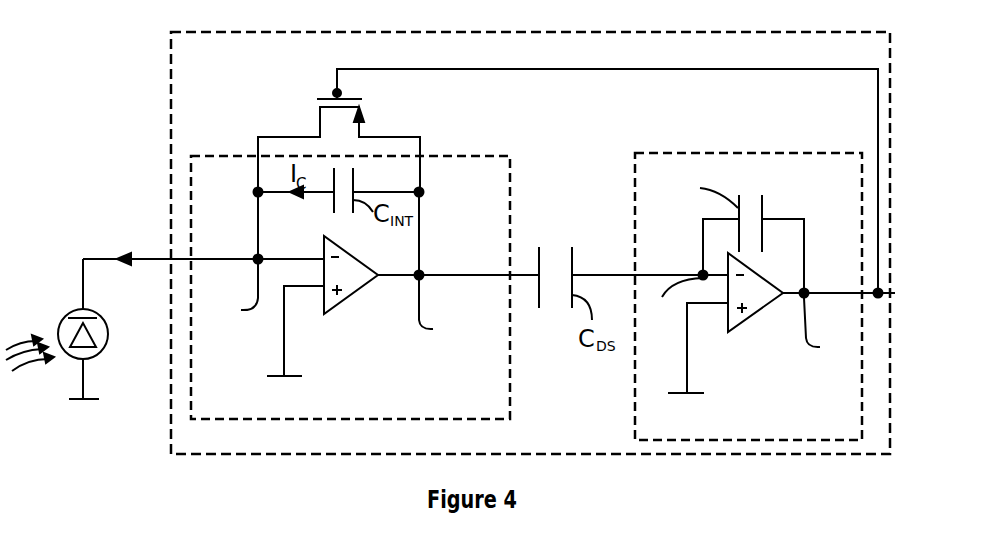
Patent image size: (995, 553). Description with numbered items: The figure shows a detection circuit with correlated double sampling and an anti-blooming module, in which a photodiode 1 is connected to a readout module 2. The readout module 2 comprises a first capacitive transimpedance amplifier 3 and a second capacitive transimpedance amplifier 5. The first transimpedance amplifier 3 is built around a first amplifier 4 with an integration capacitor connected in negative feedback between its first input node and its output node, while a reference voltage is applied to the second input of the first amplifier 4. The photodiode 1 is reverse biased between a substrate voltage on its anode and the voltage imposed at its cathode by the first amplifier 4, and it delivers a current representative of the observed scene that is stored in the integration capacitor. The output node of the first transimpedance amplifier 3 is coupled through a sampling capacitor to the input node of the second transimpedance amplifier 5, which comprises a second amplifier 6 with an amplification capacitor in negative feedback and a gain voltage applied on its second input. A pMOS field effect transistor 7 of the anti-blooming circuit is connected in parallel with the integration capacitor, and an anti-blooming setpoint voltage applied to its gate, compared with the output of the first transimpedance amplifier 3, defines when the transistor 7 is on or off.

The photodiode 1 is at (107, 337).
The readout module 2 is at (171, 95).
The first capacitive transimpedance amplifier 3 is at (511, 167).
The first amplifier 4 is at (355, 297).
The second capacitive transimpedance amplifier 5 is at (635, 168).
The second amplifier 6 is at (737, 327).
The field effect transistor 7 is at (363, 130).